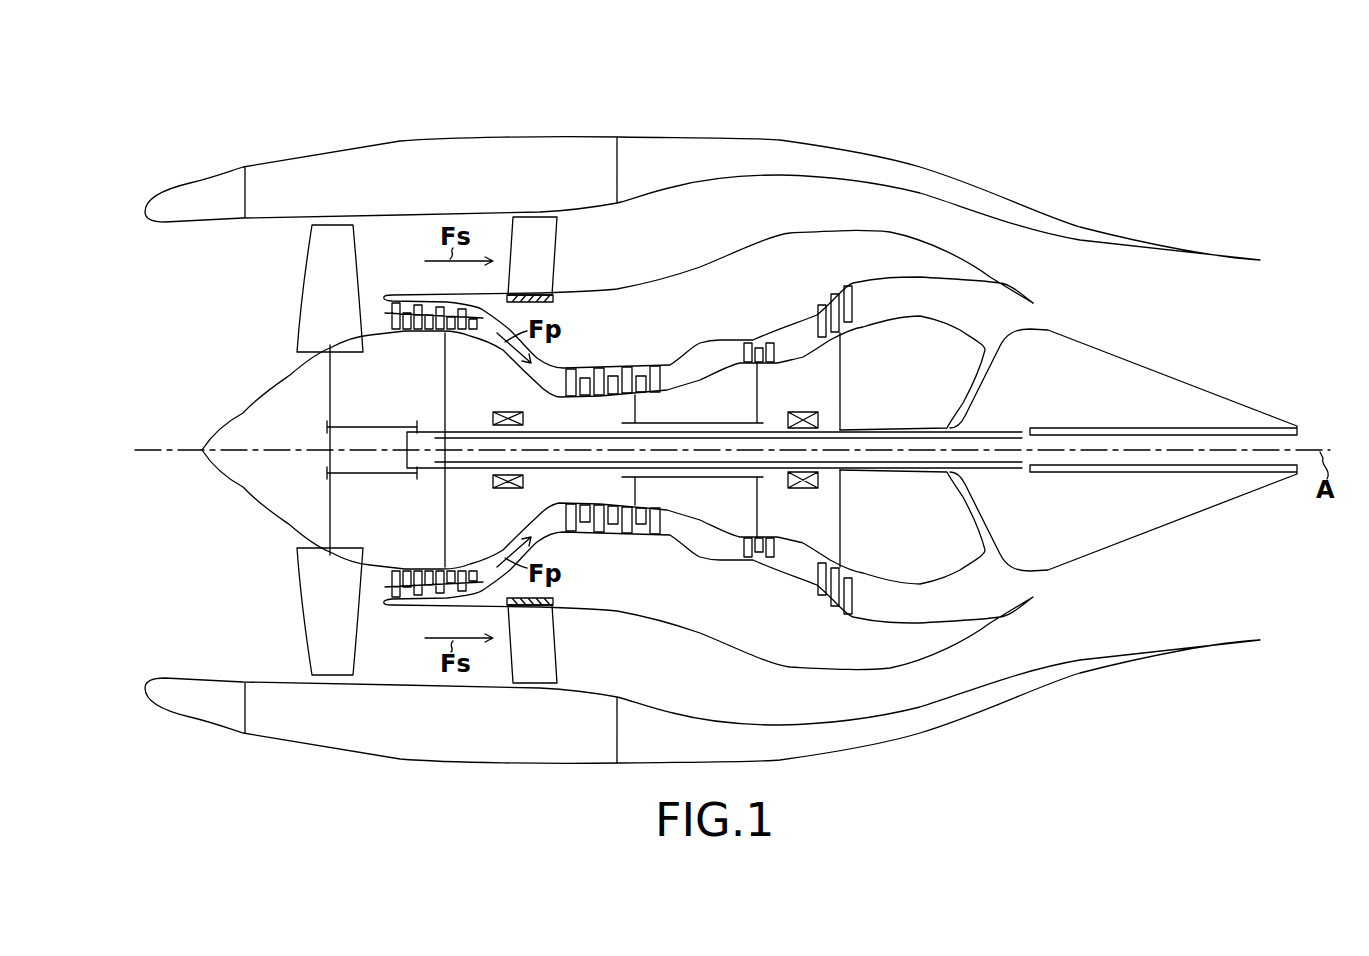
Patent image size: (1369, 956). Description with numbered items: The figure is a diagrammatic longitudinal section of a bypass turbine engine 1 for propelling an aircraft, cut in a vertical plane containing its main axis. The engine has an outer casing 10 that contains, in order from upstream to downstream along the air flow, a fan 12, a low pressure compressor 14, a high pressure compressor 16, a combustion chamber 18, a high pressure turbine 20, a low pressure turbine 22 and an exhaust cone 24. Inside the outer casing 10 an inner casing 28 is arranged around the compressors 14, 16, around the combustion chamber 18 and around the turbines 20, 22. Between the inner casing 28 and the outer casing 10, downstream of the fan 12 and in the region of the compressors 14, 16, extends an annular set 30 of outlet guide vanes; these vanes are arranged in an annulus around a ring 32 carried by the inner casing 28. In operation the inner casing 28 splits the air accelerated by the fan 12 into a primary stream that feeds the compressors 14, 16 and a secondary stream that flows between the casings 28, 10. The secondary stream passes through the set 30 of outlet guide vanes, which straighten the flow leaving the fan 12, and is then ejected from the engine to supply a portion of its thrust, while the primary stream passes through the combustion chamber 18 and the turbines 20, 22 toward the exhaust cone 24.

The bypass turbine engine 1 is at (905, 114).
The outer casing 10 is at (834, 139).
The fan 12 is at (312, 300).
The low pressure compressor 14 is at (419, 614).
The high pressure compressor 16 is at (611, 547).
The combustion chamber 18 is at (697, 532).
The high pressure turbine 20 is at (757, 567).
The low pressure turbine 22 is at (830, 617).
The exhaust cone 24 is at (1150, 367).
The inner casing 28 is at (625, 316).
The annular set of outlet guide vanes 30 is at (545, 248).
The ring 32 is at (545, 293).